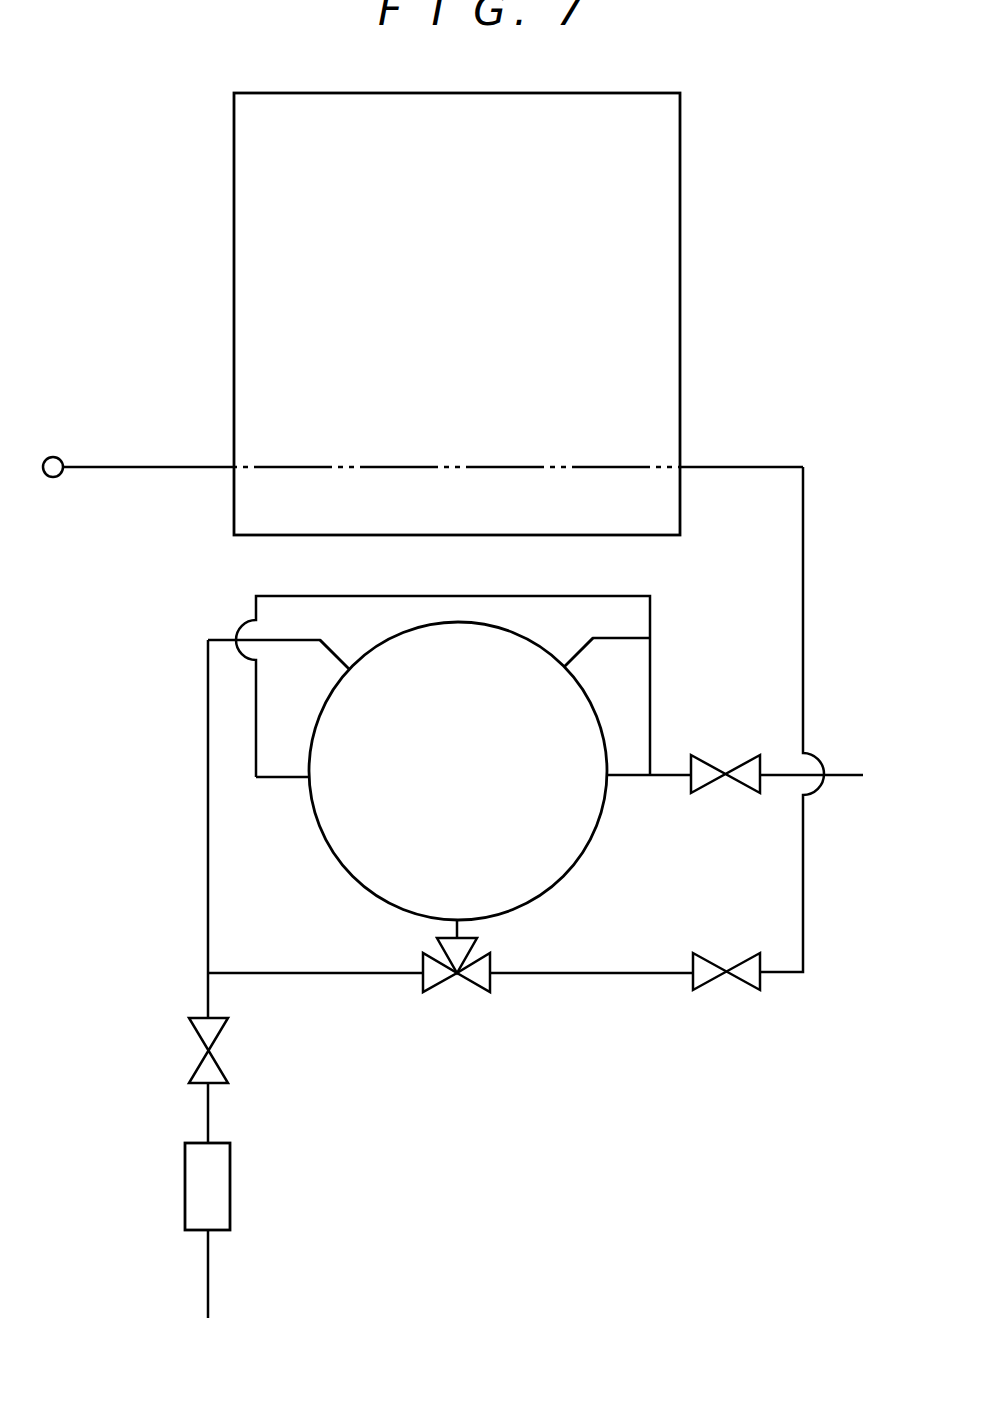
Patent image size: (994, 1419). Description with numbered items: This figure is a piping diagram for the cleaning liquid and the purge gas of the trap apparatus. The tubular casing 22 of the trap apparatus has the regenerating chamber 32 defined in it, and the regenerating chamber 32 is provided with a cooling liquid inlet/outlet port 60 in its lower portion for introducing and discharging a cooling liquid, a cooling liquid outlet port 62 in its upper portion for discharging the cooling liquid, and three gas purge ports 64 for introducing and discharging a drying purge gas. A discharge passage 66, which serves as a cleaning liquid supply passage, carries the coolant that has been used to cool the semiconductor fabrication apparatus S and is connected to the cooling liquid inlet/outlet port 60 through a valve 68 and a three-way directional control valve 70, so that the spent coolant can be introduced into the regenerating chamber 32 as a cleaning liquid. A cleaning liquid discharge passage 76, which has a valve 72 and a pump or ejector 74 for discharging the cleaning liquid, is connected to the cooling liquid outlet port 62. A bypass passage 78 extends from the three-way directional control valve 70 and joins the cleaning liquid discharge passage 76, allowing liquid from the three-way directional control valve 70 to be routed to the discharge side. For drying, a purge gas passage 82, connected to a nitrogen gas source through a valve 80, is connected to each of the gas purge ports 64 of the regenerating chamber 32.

The semiconductor fabrication apparatus S is at (680, 247).
The tubular casing 22 is at (548, 655).
The regenerating chamber 32 is at (570, 840).
The cooling liquid inlet/outlet port 60 is at (458, 928).
The cooling liquid outlet port 62 is at (342, 660).
The gas purge ports 64 is at (283, 777).
The discharge passage (cleaning liquid supply passage) 66 is at (803, 863).
The valve 68 is at (718, 985).
The three-way directional control valve 70 is at (443, 985).
The valve 72 is at (215, 1038).
The pump or ejector 74 is at (230, 1185).
The cleaning liquid discharge passage 76 is at (208, 733).
The bypass passage 78 is at (320, 973).
The valve 80 is at (716, 785).
The purge gas passage 82 is at (850, 772).